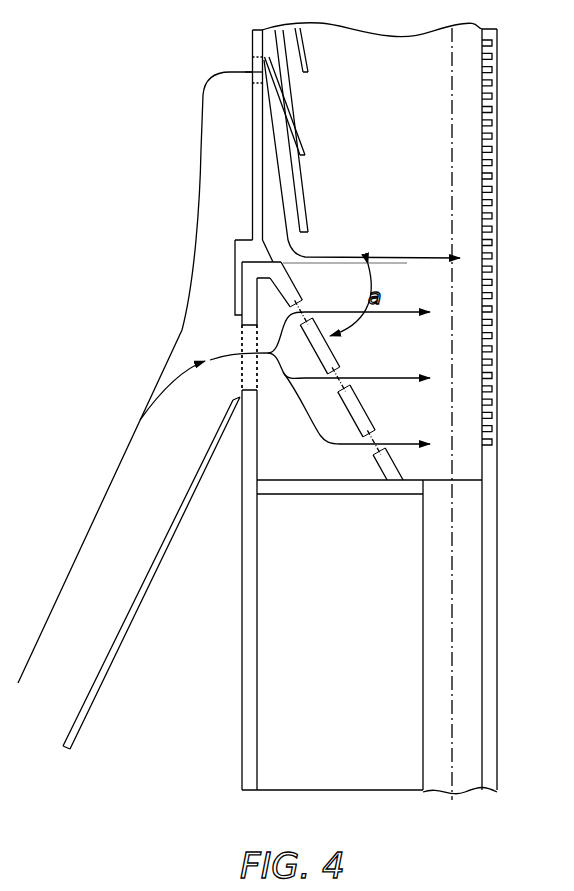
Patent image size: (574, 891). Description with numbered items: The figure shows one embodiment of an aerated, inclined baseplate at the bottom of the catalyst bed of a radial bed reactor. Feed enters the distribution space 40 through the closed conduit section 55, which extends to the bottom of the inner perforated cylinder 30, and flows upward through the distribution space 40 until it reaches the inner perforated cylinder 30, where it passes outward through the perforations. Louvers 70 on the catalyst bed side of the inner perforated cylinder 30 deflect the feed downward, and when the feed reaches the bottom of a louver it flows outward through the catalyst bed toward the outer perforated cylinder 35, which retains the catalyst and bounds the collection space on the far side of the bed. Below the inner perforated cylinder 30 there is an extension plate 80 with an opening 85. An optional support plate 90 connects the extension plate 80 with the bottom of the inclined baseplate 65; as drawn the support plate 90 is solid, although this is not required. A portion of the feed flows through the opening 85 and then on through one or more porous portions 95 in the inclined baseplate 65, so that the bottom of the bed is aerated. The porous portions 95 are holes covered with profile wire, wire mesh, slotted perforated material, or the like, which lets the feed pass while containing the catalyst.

The inner perforated cylinder 30 is at (252, 45).
The outer perforated cylinder 35 is at (500, 148).
The distribution space 40 is at (74, 694).
The closed conduit section 55 is at (175, 523).
The inclined baseplate 65 is at (297, 257).
The louvers 70 is at (303, 195).
The extension plate 80 is at (242, 293).
The opening 85 is at (243, 338).
The support plate 90 is at (304, 495).
The porous portion 95 is at (306, 306).